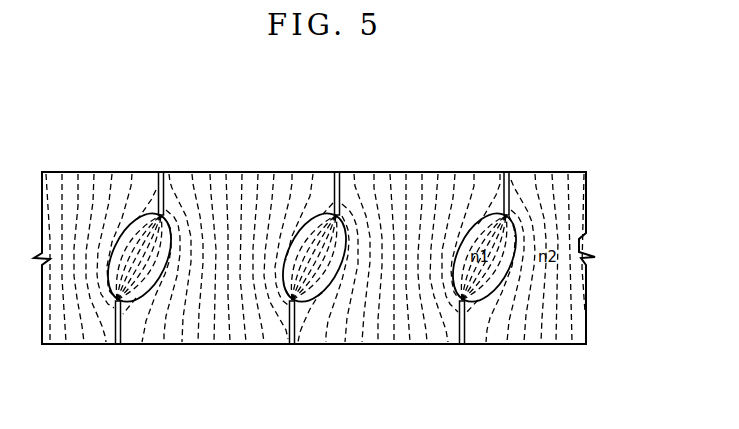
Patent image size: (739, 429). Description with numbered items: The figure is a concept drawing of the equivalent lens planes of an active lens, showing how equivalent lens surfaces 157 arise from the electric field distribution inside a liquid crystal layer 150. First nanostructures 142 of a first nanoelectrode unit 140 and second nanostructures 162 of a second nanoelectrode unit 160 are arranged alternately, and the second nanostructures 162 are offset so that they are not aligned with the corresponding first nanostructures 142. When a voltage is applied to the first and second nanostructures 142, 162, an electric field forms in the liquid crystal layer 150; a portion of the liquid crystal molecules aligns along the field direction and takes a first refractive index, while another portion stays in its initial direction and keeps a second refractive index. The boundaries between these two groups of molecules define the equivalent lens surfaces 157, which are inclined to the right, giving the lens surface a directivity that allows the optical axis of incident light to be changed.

The first nanoelectrode unit 140 is at (475, 325).
The first nanostructures 142 is at (116, 338).
The liquid crystal layer 150 is at (588, 239).
The equivalent lens surfaces 157 is at (503, 281).
The second nanoelectrode unit 160 is at (522, 203).
The second nanostructures 162 is at (160, 176).